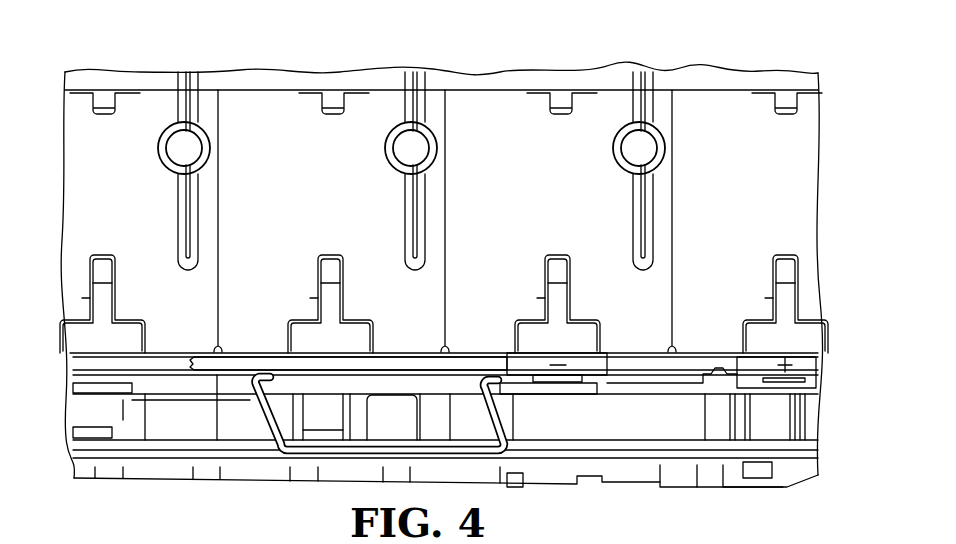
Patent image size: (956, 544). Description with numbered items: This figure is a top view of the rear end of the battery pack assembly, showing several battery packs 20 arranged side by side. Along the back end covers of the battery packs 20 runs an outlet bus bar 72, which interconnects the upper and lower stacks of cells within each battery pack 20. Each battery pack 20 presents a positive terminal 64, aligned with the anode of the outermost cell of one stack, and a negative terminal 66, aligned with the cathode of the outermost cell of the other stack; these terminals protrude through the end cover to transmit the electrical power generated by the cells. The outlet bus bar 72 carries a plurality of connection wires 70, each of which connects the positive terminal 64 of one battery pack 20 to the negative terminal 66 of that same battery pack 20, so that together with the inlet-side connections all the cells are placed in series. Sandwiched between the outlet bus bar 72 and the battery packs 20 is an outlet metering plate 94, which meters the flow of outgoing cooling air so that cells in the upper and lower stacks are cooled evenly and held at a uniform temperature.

The battery pack 20 is at (362, 92).
The positive terminal 64 is at (745, 369).
The negative terminal 66 is at (597, 365).
The connection wire 70 is at (130, 440).
The outlet bus bar 72 is at (190, 408).
The outlet metering plate 94 is at (252, 363).